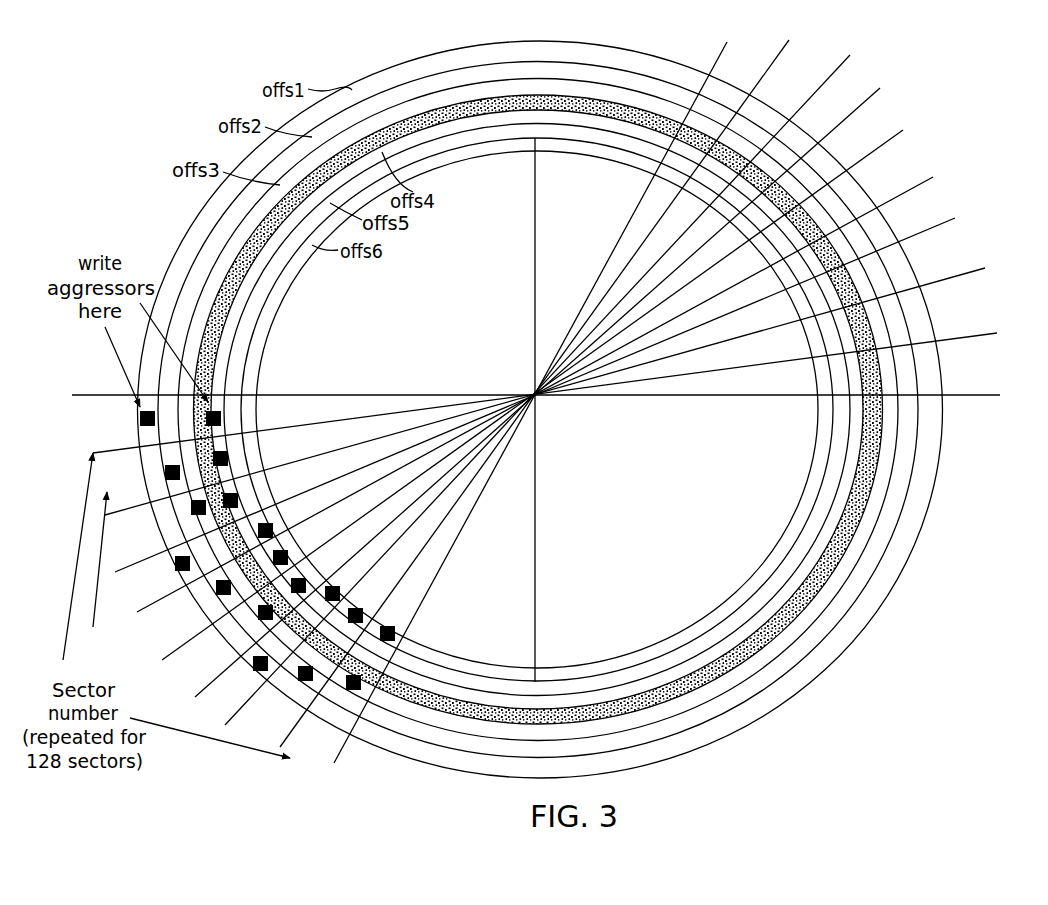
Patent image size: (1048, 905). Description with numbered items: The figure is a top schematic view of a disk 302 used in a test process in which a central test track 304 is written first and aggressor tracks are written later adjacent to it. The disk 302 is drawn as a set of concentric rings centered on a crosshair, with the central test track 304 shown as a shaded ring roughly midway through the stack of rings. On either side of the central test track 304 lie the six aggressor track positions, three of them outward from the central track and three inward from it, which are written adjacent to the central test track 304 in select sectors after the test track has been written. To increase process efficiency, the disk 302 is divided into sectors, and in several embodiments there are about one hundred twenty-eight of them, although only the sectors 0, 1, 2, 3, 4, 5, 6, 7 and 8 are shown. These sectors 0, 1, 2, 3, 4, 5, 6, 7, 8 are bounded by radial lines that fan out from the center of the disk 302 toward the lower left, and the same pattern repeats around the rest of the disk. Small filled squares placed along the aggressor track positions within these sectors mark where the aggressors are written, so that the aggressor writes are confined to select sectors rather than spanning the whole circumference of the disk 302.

The disk 302 is at (935, 73).
The central test track 304 is at (468, 105).
The sector 0 is at (545, 393).
The sector 1 is at (545, 391).
The sector 2 is at (535, 395).
The sector 3 is at (535, 394).
The sector 4 is at (532, 395).
The sector 5 is at (537, 392).
The sector 6 is at (535, 390).
The sector 7 is at (525, 393).
The sector 8 is at (512, 402).